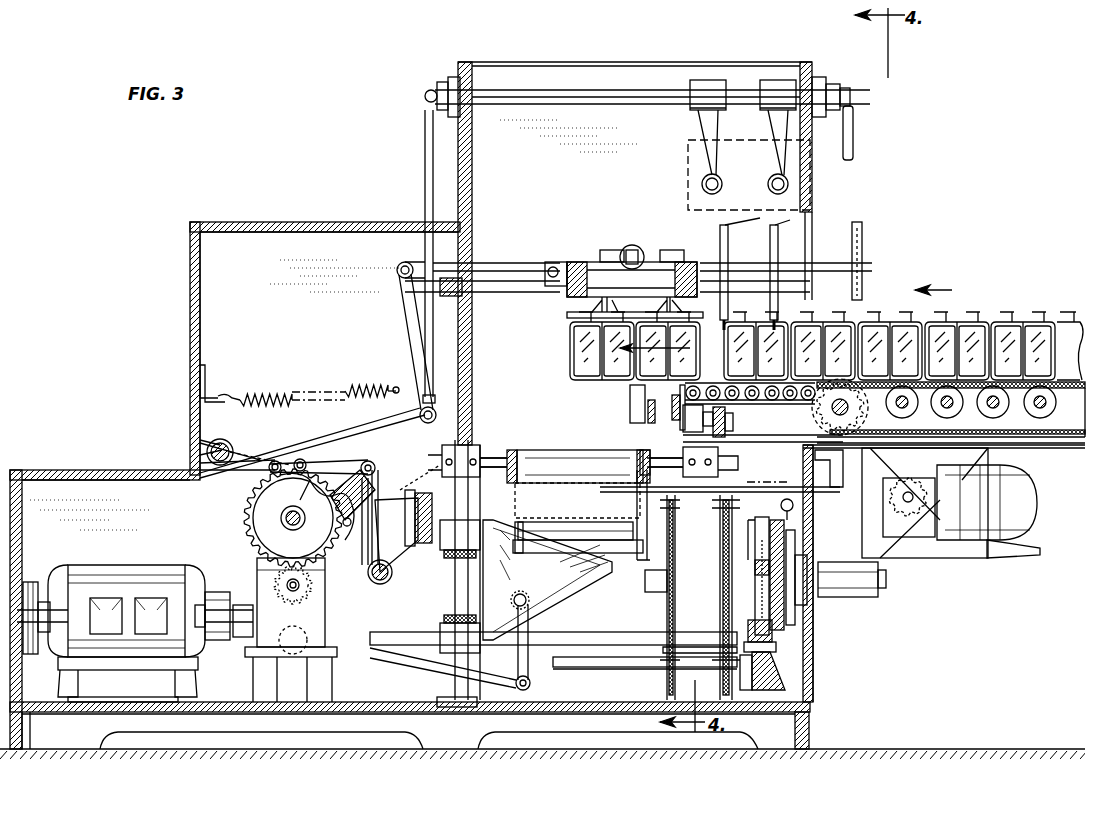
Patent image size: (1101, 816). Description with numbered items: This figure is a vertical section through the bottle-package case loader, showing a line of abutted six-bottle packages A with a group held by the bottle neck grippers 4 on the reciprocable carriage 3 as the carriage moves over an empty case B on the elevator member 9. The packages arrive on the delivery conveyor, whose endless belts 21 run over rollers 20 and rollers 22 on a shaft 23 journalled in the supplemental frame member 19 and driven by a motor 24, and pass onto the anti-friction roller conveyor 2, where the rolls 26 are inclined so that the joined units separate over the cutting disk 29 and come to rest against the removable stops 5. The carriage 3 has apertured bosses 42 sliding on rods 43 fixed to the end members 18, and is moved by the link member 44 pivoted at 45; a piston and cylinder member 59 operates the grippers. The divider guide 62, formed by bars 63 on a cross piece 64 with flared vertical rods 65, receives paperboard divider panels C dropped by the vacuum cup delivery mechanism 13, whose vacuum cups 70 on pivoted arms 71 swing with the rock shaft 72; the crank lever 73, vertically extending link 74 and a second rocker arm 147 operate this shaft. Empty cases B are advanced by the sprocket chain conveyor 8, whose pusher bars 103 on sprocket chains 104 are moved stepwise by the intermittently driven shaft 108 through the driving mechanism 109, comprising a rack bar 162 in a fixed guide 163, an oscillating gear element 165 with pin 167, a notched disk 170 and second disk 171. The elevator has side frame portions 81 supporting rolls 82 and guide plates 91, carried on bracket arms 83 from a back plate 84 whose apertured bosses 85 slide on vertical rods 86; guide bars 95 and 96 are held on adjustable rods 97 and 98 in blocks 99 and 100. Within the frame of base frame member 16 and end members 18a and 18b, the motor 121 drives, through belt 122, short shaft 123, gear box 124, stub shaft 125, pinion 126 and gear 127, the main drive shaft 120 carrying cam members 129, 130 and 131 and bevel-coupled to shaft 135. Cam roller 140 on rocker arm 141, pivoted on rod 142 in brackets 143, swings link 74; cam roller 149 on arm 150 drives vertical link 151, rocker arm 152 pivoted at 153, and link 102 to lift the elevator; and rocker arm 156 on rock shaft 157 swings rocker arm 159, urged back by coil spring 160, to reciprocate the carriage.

The roller conveyor 2 is at (748, 404).
The reciprocable carriage 3 is at (588, 262).
The bottle neck grippers 4 is at (558, 322).
The removable stops 5 is at (650, 392).
The sprocket chain conveyor 8 is at (655, 598).
The elevator member 9 is at (615, 570).
The vacuum cup delivery mechanism 13 is at (692, 160).
The base frame member 16 is at (809, 727).
The end members 18 is at (458, 140).
The end member 18a is at (16, 520).
The end member 18b is at (190, 354).
The supplemental frame member 19 is at (1035, 460).
The rollers 20 is at (993, 415).
The endless belts 21 is at (1062, 440).
The rollers 22 is at (826, 460).
The shaft 23 is at (848, 398).
The motor 24 is at (1000, 548).
The rolls 26 is at (770, 403).
The cutting disk 29 is at (775, 384).
The apertured bosses 42 is at (688, 275).
The rods 43 is at (525, 281).
The link member 44 is at (501, 263).
The pivot connection 45 is at (556, 262).
The piston and cylinder member 59 is at (632, 245).
The divider guide 62 is at (875, 250).
The bars 63 is at (872, 266).
The cross piece 64 is at (728, 236).
The vertical rods 65 is at (812, 210).
The vacuum cups 70 is at (770, 180).
The pivoted arms 71 is at (736, 110).
The rock shaft 72 is at (572, 90).
The crank lever 73 is at (440, 82).
The vertically extending link 74 is at (425, 186).
The side frame portions 81 is at (637, 555).
The rolls 82 is at (545, 525).
The bracket arms 83 is at (550, 590).
The back plate 84 is at (490, 562).
The apertured bosses 85 is at (452, 530).
The vertical rods 86 is at (460, 589).
The guide plates 91 is at (516, 508).
The guide bar 95 is at (510, 455).
The guide bar 96 is at (672, 416).
The adjustable rod 97 is at (480, 470).
The adjustable rod 98 is at (665, 460).
The block 99 is at (488, 445).
The block 100 is at (718, 460).
The link 102 is at (530, 655).
The pusher bars 103 is at (578, 458).
The sprocket chains 104 is at (680, 660).
The intermittently driven shaft 108 is at (655, 590).
The driving mechanism 109 is at (790, 640).
The main drive shaft 120 is at (285, 515).
The motor 121 is at (112, 565).
The belt 122 is at (30, 582).
The short shaft 123 is at (125, 625).
The gear box 124 is at (257, 565).
The stub shaft 125 is at (287, 585).
The pinion 126 is at (260, 592).
The gear 127 is at (272, 512).
The cam member 129 is at (250, 490).
The cam member 130 is at (320, 440).
The cam member 131 is at (330, 468).
The shaft 135 is at (575, 645).
The cam roller 140 is at (282, 477).
The rocker arm 141 is at (300, 450).
The rod 142 is at (200, 395).
The brackets 143 is at (206, 446).
The second rocker arm 147 is at (852, 97).
The cam roller 149 is at (280, 460).
The arm 150 is at (338, 460).
The vertical link 151 is at (372, 607).
The rocker arm 152 is at (405, 655).
The pivot 153 is at (288, 665).
The rocker arm 156 is at (365, 560).
The rock shaft 157 is at (380, 585).
The rocker arm 159 is at (405, 320).
The coil spring 160 is at (258, 395).
The rack bar 162 is at (762, 660).
The fixed guide 163 is at (745, 655).
The oscillating gear element 165 is at (792, 540).
The pin 167 is at (784, 530).
The disk 170 is at (810, 617).
The second disk 171 is at (815, 598).
The six bottle packages A is at (983, 322).
The cases B is at (590, 440).
The paperboard divider panels C is at (688, 180).